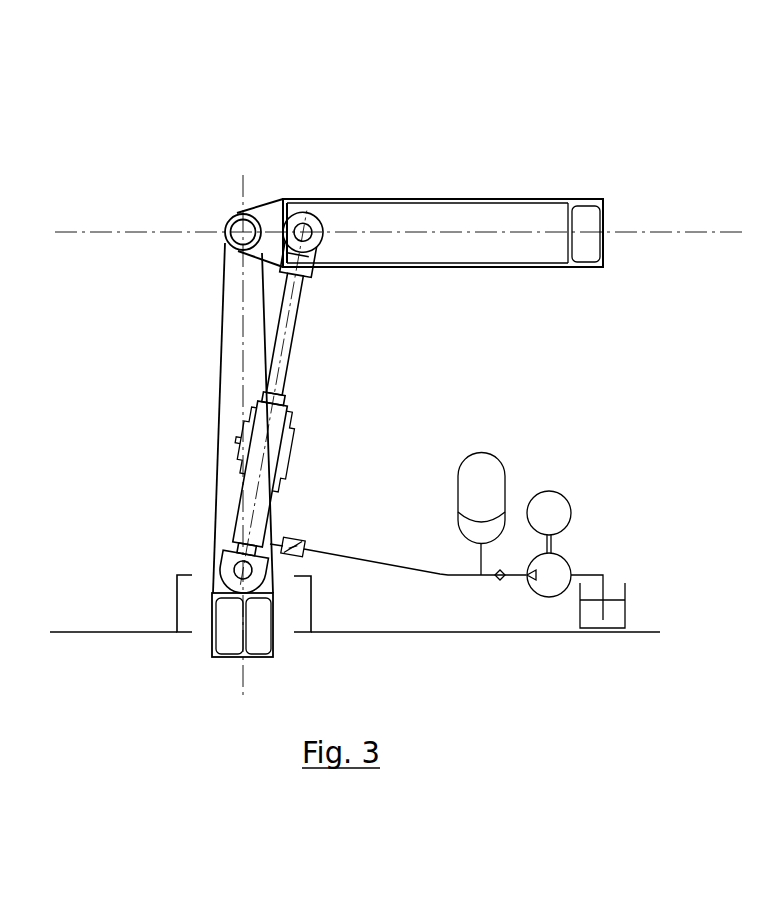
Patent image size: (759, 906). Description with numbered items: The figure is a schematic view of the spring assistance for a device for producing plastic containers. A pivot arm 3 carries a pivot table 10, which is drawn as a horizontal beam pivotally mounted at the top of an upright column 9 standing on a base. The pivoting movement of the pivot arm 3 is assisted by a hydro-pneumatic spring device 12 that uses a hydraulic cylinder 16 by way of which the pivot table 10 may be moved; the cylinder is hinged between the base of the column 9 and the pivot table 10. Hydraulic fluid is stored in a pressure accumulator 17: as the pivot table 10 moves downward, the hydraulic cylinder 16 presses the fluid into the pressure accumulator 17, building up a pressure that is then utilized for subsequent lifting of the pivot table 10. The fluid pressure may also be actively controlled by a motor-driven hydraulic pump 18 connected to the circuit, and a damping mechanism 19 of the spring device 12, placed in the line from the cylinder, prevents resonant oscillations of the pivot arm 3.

The pivot arm 3 is at (443, 225).
The column (mast) 9 is at (242, 383).
The pivot table 10 is at (508, 220).
The hydro-pneumatic spring device 12 is at (263, 448).
The hydraulic cylinder 16 is at (278, 380).
The pressure accumulator 17 is at (488, 482).
The hydraulic pump 18 is at (558, 562).
The damping mechanism 19 is at (297, 540).